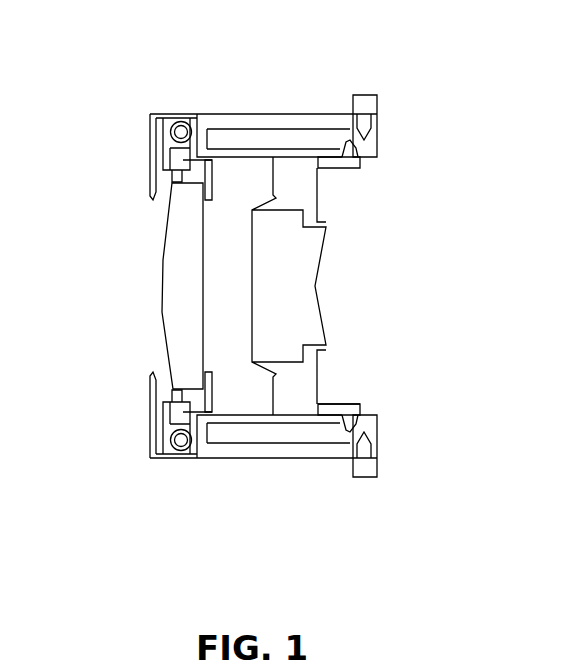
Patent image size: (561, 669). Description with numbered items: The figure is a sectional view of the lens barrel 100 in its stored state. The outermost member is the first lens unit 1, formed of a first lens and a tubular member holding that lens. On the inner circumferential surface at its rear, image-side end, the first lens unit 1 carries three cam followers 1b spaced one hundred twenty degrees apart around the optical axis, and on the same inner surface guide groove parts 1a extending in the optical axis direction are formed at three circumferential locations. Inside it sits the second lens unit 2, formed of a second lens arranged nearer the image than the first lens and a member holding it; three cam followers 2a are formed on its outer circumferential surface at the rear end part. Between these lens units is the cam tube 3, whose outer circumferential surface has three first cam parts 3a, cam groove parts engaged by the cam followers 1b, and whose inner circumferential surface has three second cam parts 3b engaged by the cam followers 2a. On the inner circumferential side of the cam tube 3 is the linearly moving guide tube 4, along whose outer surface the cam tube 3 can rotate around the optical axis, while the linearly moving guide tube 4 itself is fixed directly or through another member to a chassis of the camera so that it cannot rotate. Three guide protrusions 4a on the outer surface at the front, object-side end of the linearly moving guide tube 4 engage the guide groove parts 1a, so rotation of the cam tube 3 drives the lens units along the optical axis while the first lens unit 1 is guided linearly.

The lens barrel 100 is at (122, 108).
The first lens unit 1 is at (180, 287).
The guide groove parts 1a is at (212, 450).
The cam followers 1b is at (358, 470).
The second lens unit 2 is at (293, 302).
The cam followers 2a is at (335, 428).
The cam tube 3 is at (262, 140).
The first cam parts 3a is at (367, 133).
The second cam parts 3b is at (350, 427).
The linearly moving guide tube 4 is at (350, 420).
The guide protrusions 4a is at (193, 448).